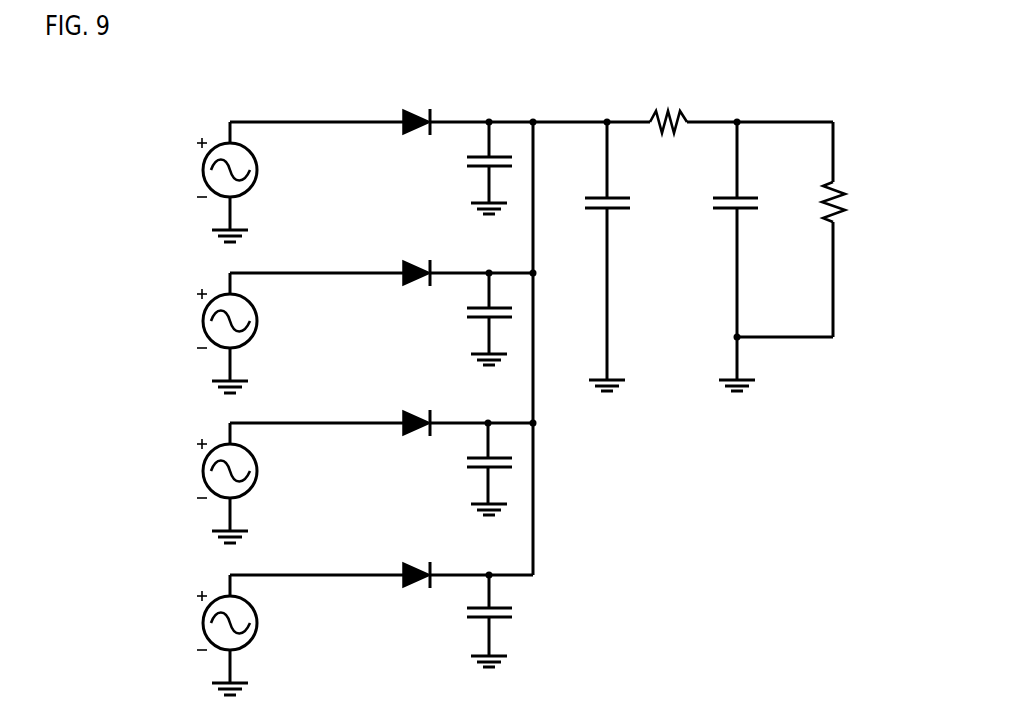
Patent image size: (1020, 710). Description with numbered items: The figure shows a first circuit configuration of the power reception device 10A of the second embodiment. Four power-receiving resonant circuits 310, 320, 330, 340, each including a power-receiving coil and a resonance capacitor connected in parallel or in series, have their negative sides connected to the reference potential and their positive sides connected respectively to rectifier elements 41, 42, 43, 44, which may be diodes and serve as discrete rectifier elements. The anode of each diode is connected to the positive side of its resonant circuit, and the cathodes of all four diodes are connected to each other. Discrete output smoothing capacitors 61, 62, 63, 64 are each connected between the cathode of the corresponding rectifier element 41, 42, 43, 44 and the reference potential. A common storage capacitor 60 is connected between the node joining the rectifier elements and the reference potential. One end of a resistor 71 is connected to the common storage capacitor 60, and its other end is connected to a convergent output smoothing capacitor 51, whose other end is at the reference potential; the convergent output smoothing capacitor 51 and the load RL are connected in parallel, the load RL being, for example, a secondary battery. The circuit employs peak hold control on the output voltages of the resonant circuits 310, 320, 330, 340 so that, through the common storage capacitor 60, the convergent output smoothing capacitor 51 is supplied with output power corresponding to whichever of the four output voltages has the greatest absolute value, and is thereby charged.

The power reception device 10A is at (797, 68).
The power-receiving resonant circuit 310 is at (260, 161).
The power-receiving resonant circuit 320 is at (259, 306).
The power-receiving resonant circuit 330 is at (259, 456).
The power-receiving resonant circuit 340 is at (259, 608).
The rectifier element 41 is at (426, 105).
The rectifier element 42 is at (426, 256).
The rectifier element 43 is at (426, 406).
The rectifier element 44 is at (426, 557).
The discrete output smoothing capacitor 61 is at (461, 159).
The discrete output smoothing capacitor 62 is at (461, 310).
The discrete output smoothing capacitor 63 is at (461, 460).
The discrete output smoothing capacitor 64 is at (461, 612).
The common storage capacitor 60 is at (627, 189).
The resistor 71 is at (665, 102).
The convergent output smoothing capacitor 51 is at (755, 189).
The load RL is at (850, 184).